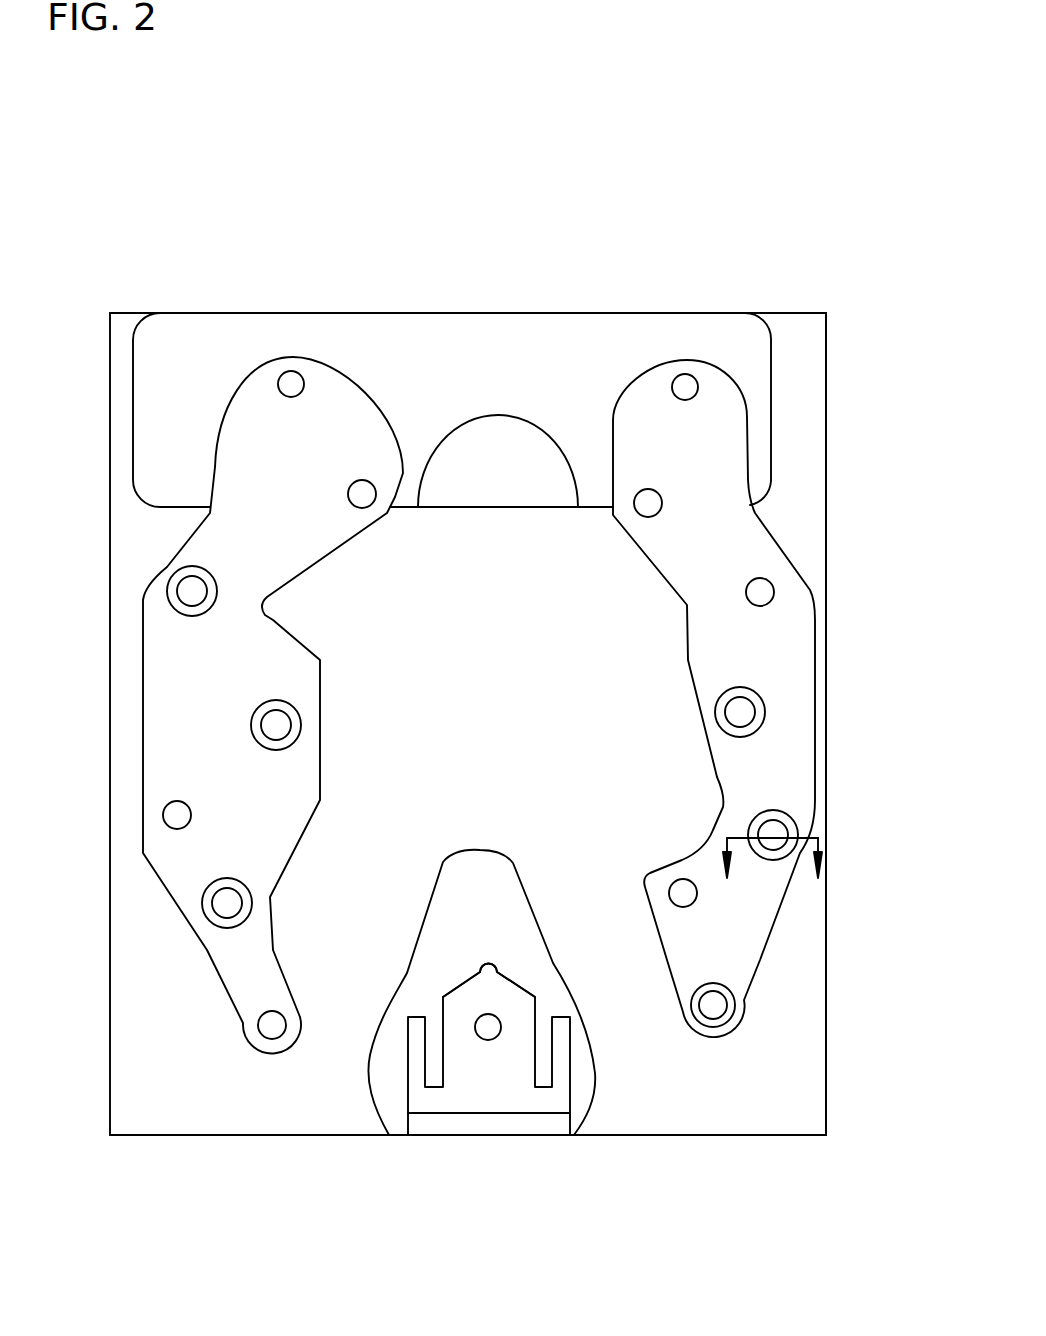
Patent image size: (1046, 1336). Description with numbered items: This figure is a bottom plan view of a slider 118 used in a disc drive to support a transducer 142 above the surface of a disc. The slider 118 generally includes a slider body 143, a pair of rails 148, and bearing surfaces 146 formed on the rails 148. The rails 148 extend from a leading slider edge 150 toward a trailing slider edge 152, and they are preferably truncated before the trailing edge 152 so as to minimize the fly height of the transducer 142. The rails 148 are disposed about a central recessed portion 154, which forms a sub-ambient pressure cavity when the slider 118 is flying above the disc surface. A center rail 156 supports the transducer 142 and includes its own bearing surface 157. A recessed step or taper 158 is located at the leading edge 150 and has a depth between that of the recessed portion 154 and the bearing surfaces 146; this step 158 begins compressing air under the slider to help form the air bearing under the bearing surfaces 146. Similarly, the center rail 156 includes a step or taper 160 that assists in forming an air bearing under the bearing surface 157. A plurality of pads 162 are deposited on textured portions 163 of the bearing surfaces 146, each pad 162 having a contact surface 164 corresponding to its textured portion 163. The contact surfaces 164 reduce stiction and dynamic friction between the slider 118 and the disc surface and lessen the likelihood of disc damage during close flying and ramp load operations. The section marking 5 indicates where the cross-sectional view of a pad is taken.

The slider 118 is at (678, 204).
The transducer 142 is at (540, 1125).
The slider body 143 is at (826, 355).
The bearing surfaces 146 is at (175, 698).
The rails 148 is at (182, 618).
The leading slider edge 150 is at (392, 315).
The trailing slider edge 152 is at (765, 1137).
The central recessed portion 154 is at (527, 608).
The center rail 156 is at (505, 1094).
The bearing surface 157 is at (483, 1138).
The recessed step or taper 158 is at (558, 352).
The step (or taper) 160 is at (404, 1014).
The pads 162 is at (291, 371).
The textured portions 163 is at (295, 738).
The contact surface 164 is at (287, 725).
The section line 5- 5 is at (772, 860).